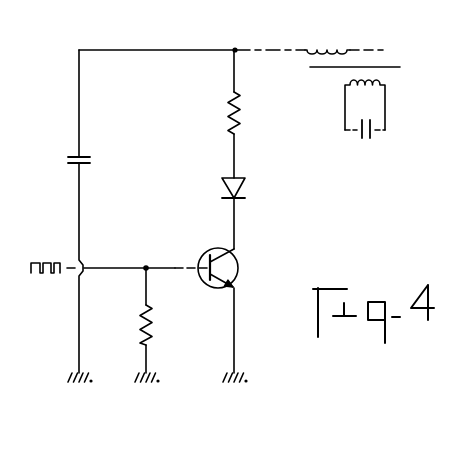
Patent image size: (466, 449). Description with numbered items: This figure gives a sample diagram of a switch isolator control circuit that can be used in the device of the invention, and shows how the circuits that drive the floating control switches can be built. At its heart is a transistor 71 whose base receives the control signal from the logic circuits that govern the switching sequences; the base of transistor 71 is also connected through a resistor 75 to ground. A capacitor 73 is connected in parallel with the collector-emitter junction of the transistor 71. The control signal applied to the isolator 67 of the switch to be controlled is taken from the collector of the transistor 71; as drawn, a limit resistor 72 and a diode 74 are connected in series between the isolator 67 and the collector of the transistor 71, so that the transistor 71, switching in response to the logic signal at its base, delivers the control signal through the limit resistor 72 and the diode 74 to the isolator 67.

The isolator 67 is at (330, 83).
The transistor 71 is at (239, 263).
The limit resistor 72 is at (229, 122).
The capacitor 73 is at (84, 156).
The diode 74 is at (246, 185).
The resistor 75 is at (155, 332).